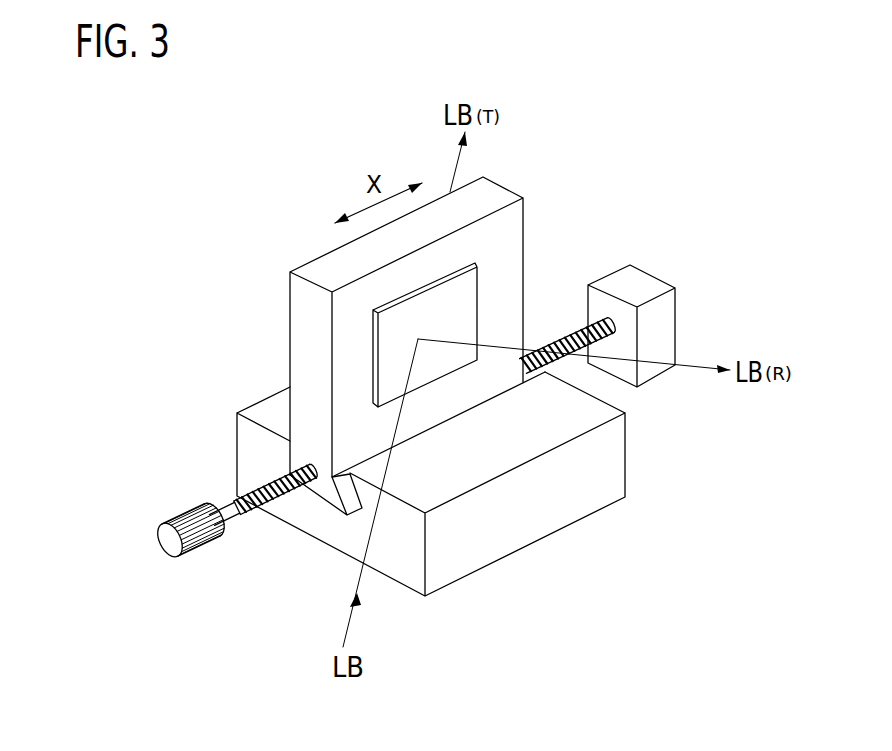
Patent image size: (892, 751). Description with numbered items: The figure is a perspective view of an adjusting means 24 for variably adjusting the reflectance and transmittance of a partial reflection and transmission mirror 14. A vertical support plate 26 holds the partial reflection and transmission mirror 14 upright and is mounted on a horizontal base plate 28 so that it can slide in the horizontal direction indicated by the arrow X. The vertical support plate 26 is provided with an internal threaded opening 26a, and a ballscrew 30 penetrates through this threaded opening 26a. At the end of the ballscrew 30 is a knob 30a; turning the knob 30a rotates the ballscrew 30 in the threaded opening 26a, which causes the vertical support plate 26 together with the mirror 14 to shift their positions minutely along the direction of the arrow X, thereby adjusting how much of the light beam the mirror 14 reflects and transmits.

The partial reflection and transmission mirror 14 is at (378, 320).
The adjusting means 24 is at (368, 374).
The vertical support plate 26 is at (505, 193).
The internal threaded opening 26a is at (291, 458).
The horizontal base plate 28 is at (525, 525).
The ballscrew 30 is at (232, 525).
The knob 30a is at (198, 553).